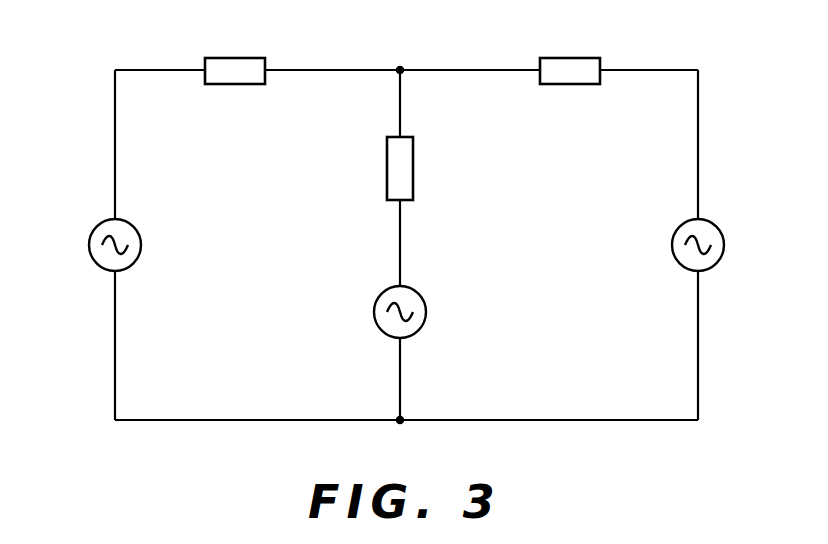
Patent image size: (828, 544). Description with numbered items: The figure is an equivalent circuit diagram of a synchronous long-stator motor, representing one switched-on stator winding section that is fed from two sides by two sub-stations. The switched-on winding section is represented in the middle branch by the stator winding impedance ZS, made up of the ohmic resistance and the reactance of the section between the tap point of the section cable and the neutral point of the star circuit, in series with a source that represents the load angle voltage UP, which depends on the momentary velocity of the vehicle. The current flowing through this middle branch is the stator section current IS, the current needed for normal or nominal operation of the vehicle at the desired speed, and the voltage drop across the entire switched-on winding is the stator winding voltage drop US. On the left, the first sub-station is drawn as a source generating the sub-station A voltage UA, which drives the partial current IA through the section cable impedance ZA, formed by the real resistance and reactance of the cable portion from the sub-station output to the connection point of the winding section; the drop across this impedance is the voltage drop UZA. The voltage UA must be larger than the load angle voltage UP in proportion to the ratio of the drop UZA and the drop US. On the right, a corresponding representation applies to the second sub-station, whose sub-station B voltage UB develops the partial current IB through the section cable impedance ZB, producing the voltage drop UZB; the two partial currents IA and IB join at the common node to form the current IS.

The section cable impedance of sub-station A ZA is at (259, 42).
The section cable impedance of sub-station B ZB is at (584, 45).
The stator winding section impedance ZS is at (337, 172).
The sub-station A voltage UA is at (68, 185).
The sub-station B voltage UB is at (745, 187).
The load angle voltage UP is at (361, 365).
The partial current from sub-station A IA is at (390, 54).
The partial current from sub-station B IB is at (493, 56).
The stator section current IS is at (431, 112).
The voltage drop across cable impedance A UZA is at (305, 100).
The voltage drop across cable impedance B UZB is at (630, 99).
The stator winding voltage drop US is at (487, 122).